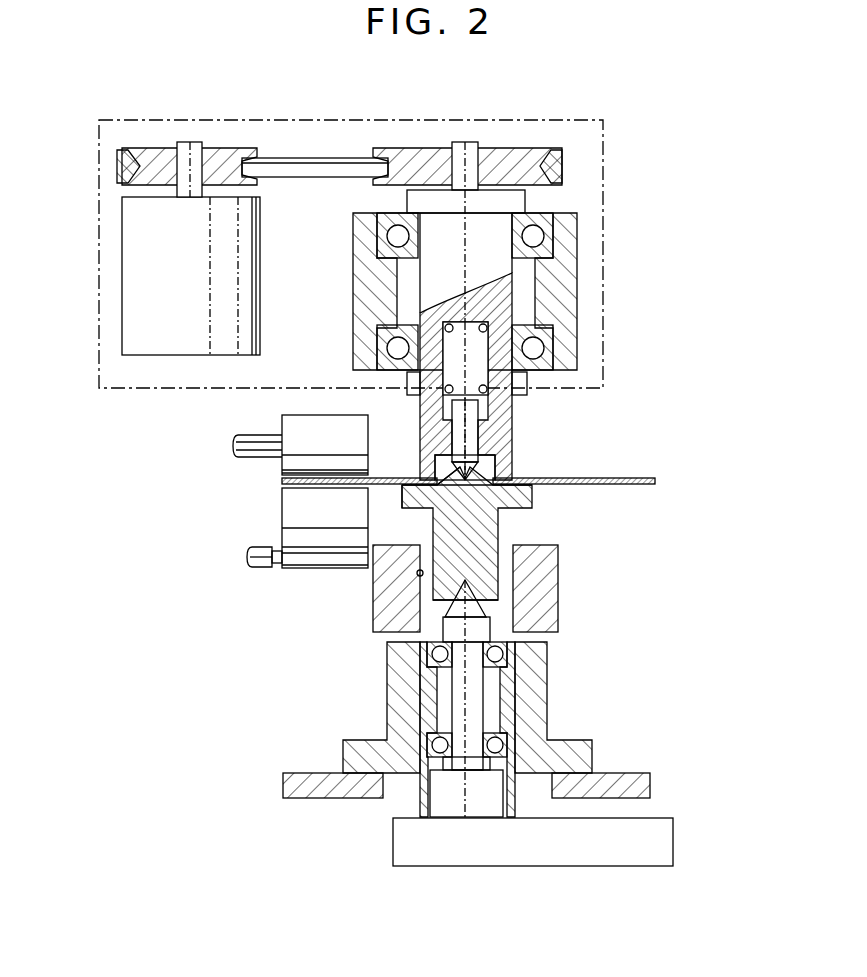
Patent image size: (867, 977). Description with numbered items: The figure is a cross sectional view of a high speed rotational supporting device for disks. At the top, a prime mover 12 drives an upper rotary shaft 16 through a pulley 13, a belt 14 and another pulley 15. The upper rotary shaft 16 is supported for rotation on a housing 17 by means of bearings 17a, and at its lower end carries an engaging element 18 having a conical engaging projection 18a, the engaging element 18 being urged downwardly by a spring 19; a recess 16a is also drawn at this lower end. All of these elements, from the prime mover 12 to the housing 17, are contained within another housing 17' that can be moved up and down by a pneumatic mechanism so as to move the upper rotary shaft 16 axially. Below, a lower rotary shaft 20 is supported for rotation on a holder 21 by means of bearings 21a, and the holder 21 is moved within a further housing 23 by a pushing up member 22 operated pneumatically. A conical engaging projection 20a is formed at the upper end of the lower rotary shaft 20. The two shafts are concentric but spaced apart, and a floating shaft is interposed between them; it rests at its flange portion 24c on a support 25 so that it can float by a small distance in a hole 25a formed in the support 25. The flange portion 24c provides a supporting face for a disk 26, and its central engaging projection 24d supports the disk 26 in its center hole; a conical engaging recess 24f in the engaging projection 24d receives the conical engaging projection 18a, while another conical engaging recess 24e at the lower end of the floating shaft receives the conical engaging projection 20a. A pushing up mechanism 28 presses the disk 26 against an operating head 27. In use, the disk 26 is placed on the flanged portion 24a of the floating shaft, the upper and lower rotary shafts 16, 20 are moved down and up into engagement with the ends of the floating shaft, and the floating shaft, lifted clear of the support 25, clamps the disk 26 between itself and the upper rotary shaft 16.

The prime mover 12 is at (137, 305).
The pulley 13 is at (218, 152).
The belt 14 is at (310, 163).
The pulley 15 is at (415, 153).
The upper rotary shaft 16 is at (490, 230).
The recess in spindle 16a is at (492, 460).
The housing 17 is at (508, 291).
The housing 17' is at (371, 219).
The bearings 17a is at (552, 242).
The engaging element 18 is at (467, 432).
The conical engaging projection 18a is at (477, 477).
The spring 19 is at (485, 327).
The lower rotary shaft 20 is at (470, 708).
The conical engaging projection 20a is at (477, 612).
The holder 21 is at (505, 683).
The bearings 21a is at (500, 740).
The pushing up member 22 is at (660, 837).
The housing 23 is at (395, 718).
The flanged portion 24a is at (483, 535).
The flange portion 24c is at (400, 496).
The engaging projection 24d is at (525, 493).
The conical engaging recess 24e is at (452, 605).
The conical engaging recess 24f is at (457, 476).
The support 25 is at (382, 618).
The hole 25a is at (419, 574).
The disk 26 is at (655, 483).
The operating head 27 is at (293, 430).
The pushing up mechanism 28 is at (295, 512).